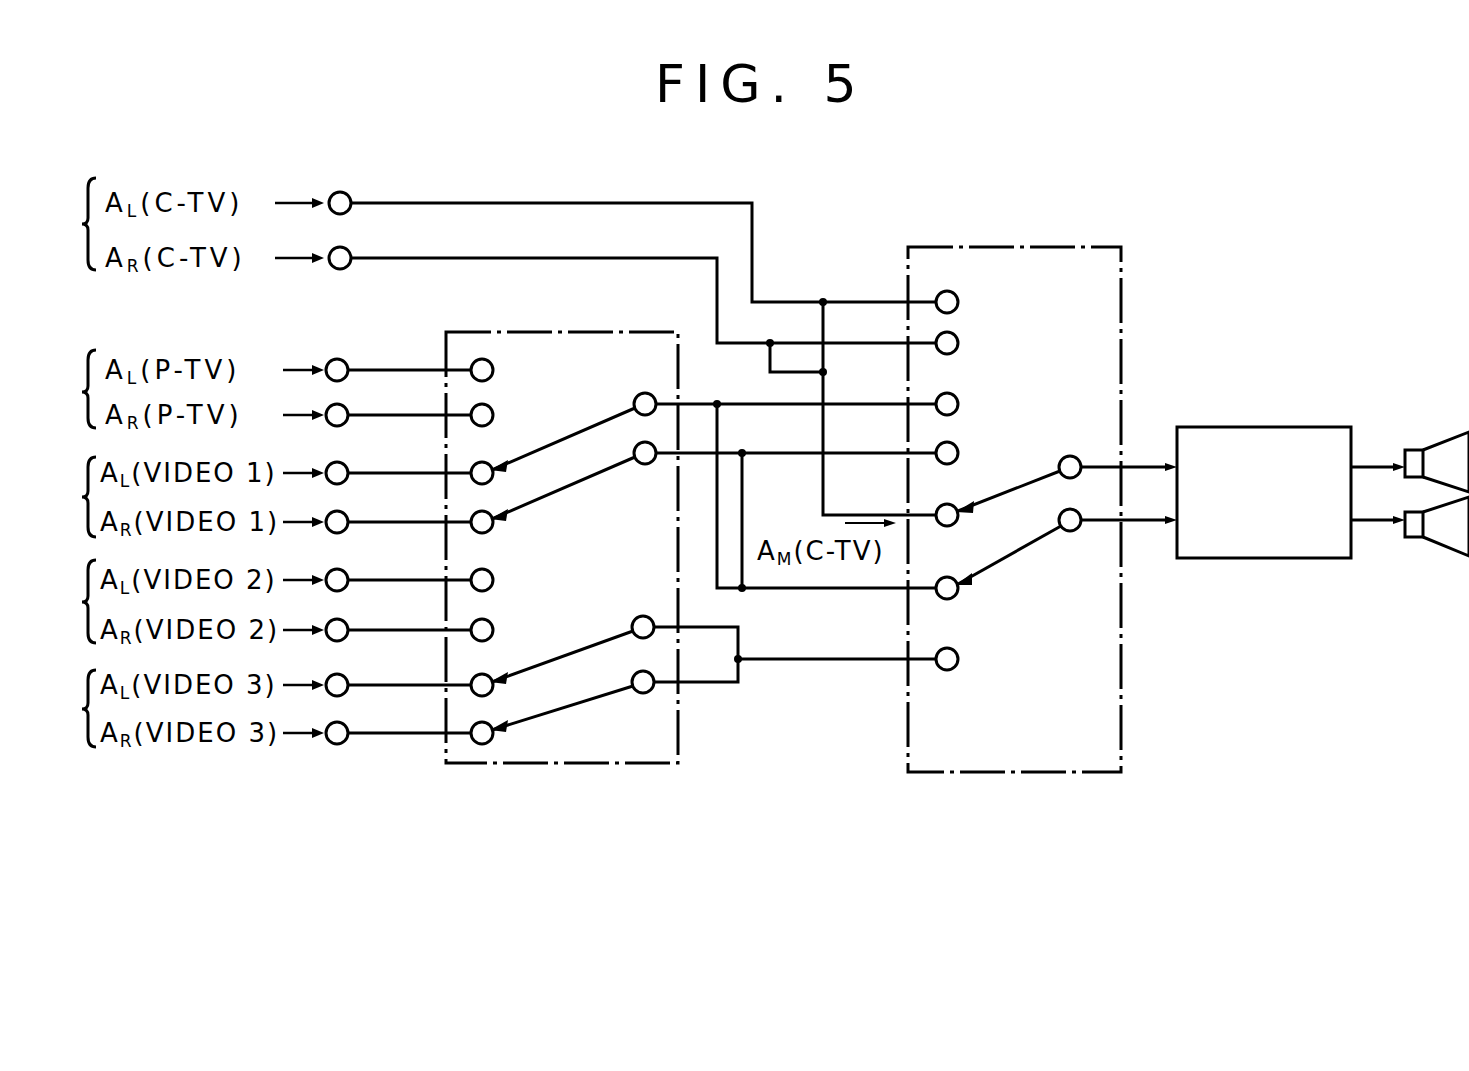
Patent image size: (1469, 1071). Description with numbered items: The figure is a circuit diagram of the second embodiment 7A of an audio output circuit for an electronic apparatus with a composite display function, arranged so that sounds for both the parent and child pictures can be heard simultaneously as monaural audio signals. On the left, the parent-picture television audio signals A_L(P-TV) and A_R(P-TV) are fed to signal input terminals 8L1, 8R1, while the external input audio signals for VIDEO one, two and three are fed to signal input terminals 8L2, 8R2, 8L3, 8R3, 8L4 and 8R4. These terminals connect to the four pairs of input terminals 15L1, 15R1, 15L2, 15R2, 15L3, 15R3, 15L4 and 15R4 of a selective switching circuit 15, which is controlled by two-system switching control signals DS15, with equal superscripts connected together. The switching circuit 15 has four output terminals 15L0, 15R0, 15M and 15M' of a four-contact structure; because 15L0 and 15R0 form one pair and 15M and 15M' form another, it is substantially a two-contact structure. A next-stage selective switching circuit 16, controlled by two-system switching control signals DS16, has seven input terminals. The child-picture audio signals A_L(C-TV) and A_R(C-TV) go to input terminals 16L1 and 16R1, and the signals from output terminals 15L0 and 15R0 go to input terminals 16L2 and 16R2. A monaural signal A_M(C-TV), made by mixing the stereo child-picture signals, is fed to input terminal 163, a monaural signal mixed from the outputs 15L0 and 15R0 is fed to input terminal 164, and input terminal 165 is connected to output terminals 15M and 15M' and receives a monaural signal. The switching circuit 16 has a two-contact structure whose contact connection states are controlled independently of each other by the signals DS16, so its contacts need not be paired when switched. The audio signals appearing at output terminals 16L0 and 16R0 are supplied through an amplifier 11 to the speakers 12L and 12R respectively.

The second embodiment 7A is at (1003, 212).
The signal input terminal 8L1 is at (348, 368).
The signal input terminal 8R1 is at (348, 413).
The signal input terminal 8L2 is at (348, 471).
The signal input terminal 8R2 is at (348, 520).
The signal input terminal 8L3 is at (348, 578).
The signal input terminal 8R3 is at (348, 628).
The signal input terminal 8L4 is at (348, 683).
The signal input terminal 8R4 is at (348, 731).
The amplifier 11 is at (1272, 427).
The speaker 12L is at (1437, 440).
The speaker 12R is at (1437, 545).
The selective switching circuit 15 is at (615, 763).
The input terminal 15L1 is at (493, 370).
The input terminal 15R1 is at (491, 408).
The input terminal 15L2 is at (488, 463).
The input terminal 15R2 is at (493, 522).
The input terminal 15L3 is at (493, 580).
The input terminal 15R3 is at (493, 630).
The input terminal 15L4 is at (493, 685).
The input terminal 15R4 is at (493, 733).
The output terminal 15L0 is at (645, 393).
The output terminal 15R0 is at (645, 464).
The output terminal 15M is at (642, 591).
The output terminal 15M' is at (641, 709).
The selective switching circuit 16 is at (1090, 772).
The input terminal 16L1 is at (958, 302).
The input terminal 16R1 is at (958, 343).
The input terminal 16L2 is at (958, 404).
The input terminal 16R2 is at (958, 453).
The input terminal 163 is at (958, 517).
The input terminal 164 is at (958, 592).
The input terminal 165 is at (958, 664).
The output terminal 16L0 is at (1070, 456).
The output terminal 16R0 is at (1072, 531).
The switching control signals DS15 is at (512, 775).
The switching control signals DS16 is at (947, 784).